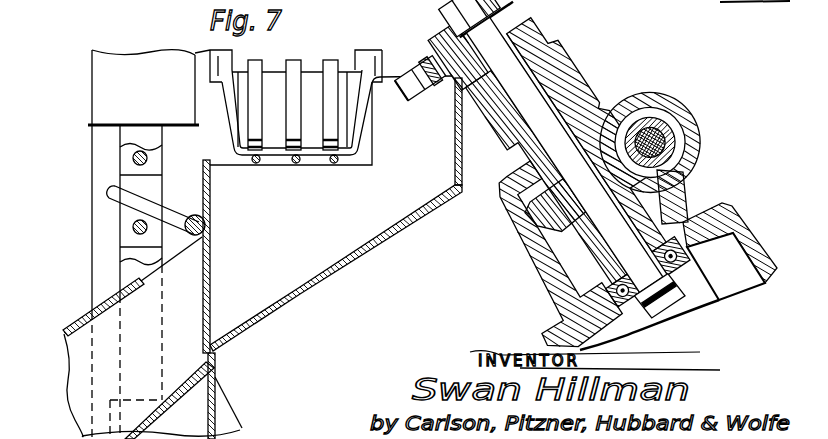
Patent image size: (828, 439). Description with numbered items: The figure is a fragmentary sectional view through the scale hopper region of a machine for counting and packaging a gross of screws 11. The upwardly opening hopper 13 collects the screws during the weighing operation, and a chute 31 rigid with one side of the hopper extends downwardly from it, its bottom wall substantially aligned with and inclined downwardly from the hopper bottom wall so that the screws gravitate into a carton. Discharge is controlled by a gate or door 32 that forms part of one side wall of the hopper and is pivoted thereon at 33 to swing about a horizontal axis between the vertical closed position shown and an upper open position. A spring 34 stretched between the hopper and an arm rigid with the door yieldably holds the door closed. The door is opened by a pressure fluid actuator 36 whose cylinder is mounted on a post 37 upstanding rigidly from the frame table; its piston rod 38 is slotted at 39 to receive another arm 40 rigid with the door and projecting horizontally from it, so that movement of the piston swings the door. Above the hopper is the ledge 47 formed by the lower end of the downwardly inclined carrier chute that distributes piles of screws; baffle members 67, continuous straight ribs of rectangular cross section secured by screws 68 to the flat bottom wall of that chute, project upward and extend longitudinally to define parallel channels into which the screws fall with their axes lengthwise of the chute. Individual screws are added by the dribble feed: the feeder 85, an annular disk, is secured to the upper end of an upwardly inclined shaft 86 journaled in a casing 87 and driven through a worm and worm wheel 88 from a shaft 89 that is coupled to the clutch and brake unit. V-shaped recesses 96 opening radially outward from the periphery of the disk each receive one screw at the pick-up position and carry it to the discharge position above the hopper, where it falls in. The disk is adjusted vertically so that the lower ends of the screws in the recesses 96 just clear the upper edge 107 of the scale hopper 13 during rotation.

The screws 11 is at (417, 74).
The hopper 13 is at (352, 250).
The chute 31 is at (78, 320).
The gate or door 32 is at (207, 318).
The pivot 33 is at (205, 222).
The spring 34 is at (588, 0).
The pressure fluid actuator 36 is at (105, 91).
The post 37 is at (95, 164).
The piston rod 38 is at (160, 140).
The slot 39 is at (158, 184).
The arm 40 is at (166, 207).
The ledge 47 is at (320, 162).
The baffle members 67 is at (258, 62).
The screws (fasteners) 68 is at (258, 163).
The feeder 85 is at (448, 52).
The shaft 86 is at (528, 118).
The casing 87 is at (525, 147).
The worm and worm wheel 88 is at (660, 168).
The shaft 89 is at (660, 148).
The V-shaped recesses 96 is at (407, 93).
The upper edge 107 is at (458, 76).